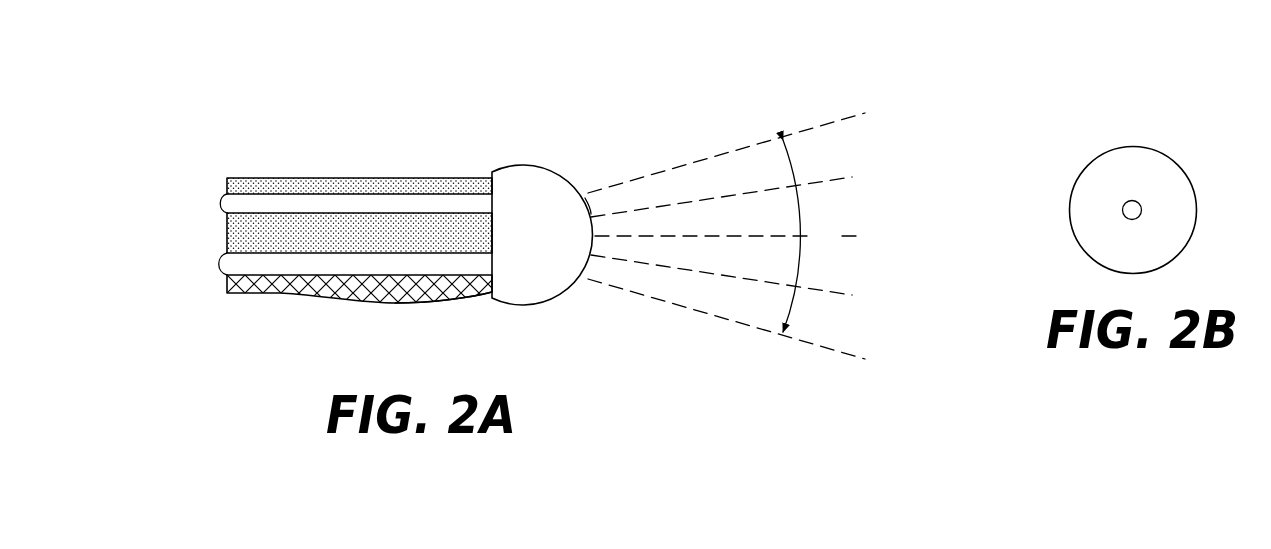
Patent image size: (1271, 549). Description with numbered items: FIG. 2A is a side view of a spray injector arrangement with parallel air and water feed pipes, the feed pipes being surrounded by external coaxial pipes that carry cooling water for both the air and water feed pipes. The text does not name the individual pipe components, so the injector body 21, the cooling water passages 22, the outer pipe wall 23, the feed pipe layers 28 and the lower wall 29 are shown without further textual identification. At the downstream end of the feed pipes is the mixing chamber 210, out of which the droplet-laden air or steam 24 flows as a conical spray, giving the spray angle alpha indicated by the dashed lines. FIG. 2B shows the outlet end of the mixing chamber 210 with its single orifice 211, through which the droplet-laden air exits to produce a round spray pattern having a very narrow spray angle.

In FIG. 2A, the light emitting assembly 21 is at (512, 221).
In FIG. 2A, the lumen / fluid channel 22 is at (236, 205).
In FIG. 2A, the outer layer 23 is at (360, 268).
In FIG. 2A, the droplet-laden air or steam 24 is at (588, 205).
In FIG. 2A, the light conducting layer 28 is at (352, 178).
In FIG. 2A, the bottom surface of outer layer 29 is at (447, 302).
In FIG. 2A, the mixing chamber 210 is at (558, 205).
In FIG. 2B, the single orifice 211 is at (1141, 208).